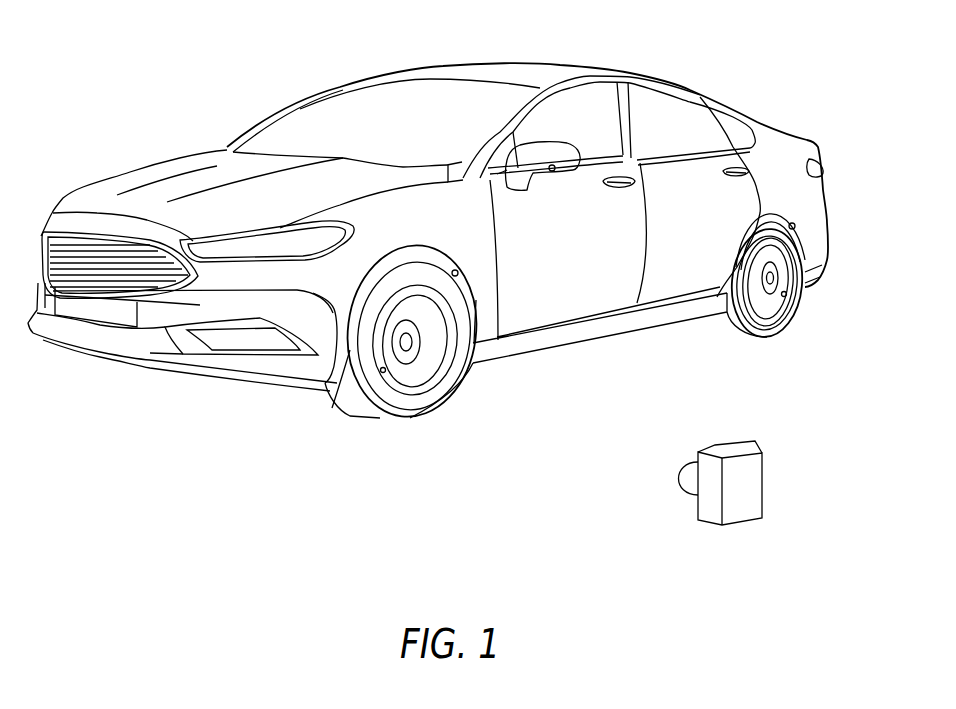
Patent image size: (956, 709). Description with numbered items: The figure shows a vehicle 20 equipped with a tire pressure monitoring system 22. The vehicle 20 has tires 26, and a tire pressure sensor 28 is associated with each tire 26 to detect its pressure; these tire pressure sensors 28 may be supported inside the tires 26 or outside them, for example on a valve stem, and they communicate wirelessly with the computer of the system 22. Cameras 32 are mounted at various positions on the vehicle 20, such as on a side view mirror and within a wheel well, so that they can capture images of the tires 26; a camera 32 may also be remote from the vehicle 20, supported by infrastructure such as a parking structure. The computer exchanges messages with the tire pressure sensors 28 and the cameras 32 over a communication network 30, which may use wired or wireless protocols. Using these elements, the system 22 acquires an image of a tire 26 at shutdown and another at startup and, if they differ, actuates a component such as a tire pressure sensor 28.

The vehicle 20 is at (453, 66).
The tire pressure monitoring system 22 is at (508, 397).
The tire 26 is at (415, 418).
The tire pressure sensor 28 is at (383, 374).
The communication network 30 is at (317, 340).
The camera 32 is at (556, 172).